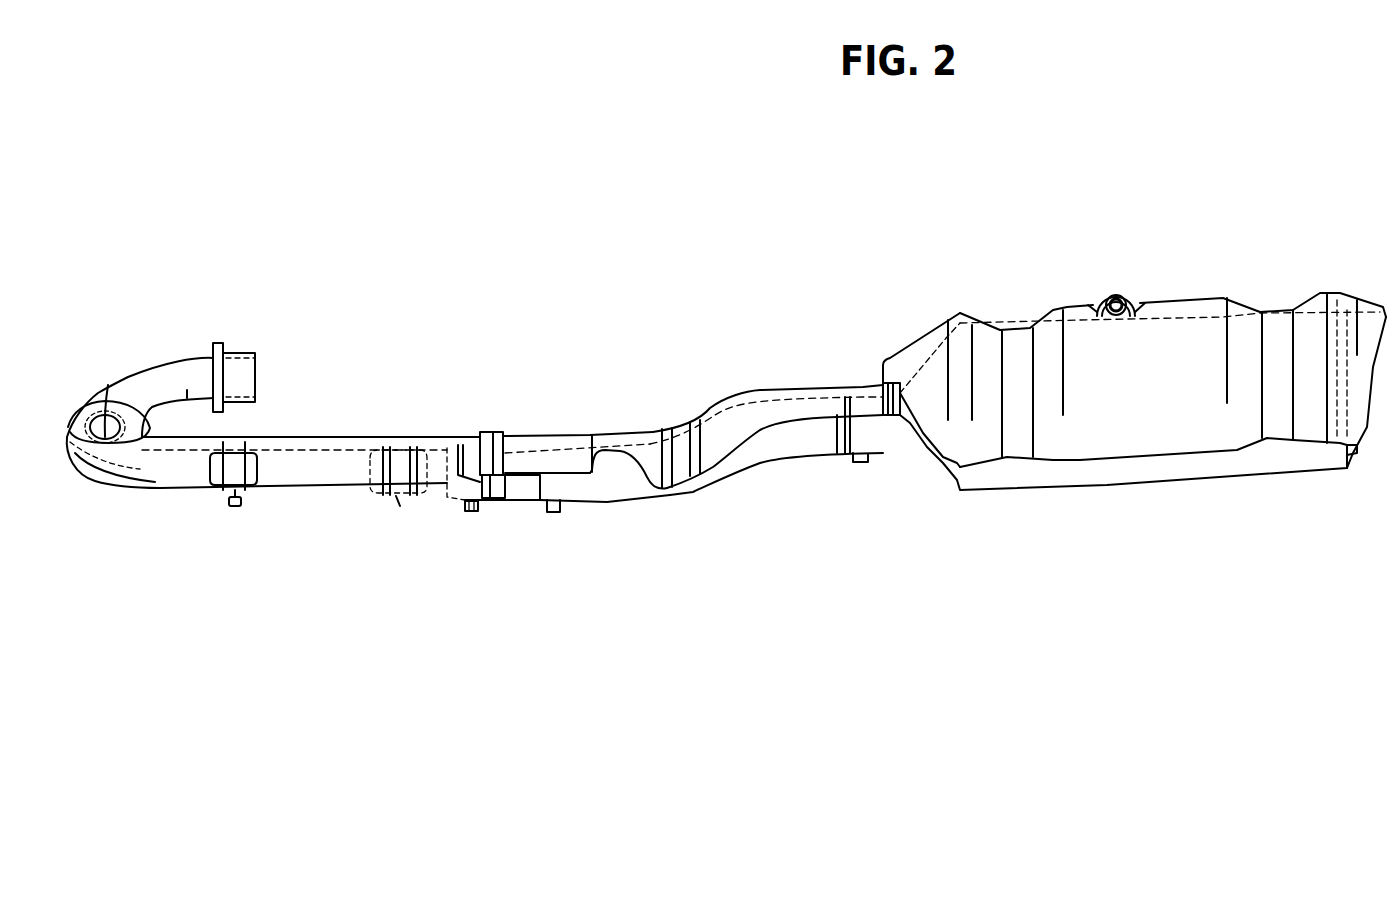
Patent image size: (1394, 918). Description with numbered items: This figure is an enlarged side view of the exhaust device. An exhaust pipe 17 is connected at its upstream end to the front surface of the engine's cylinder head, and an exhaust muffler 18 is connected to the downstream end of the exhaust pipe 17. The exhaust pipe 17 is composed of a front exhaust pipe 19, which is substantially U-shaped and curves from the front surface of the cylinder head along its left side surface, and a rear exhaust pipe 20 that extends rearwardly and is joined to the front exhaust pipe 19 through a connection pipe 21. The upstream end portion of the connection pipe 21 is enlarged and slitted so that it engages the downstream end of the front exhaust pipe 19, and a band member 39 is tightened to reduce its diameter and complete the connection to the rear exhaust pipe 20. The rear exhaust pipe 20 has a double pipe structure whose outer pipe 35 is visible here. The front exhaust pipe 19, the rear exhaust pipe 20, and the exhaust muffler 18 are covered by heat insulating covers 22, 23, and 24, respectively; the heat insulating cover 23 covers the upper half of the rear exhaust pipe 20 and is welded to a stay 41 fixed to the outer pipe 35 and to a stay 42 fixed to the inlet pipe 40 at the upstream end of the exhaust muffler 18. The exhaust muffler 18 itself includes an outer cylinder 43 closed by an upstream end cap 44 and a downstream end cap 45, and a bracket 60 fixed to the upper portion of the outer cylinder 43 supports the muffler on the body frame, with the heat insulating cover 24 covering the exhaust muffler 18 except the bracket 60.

The exhaust pipe 17 is at (178, 358).
The exhaust muffler 18 is at (1107, 484).
The front exhaust pipe 19 is at (346, 451).
The rear exhaust pipe 20 is at (673, 499).
The connection pipe 21 is at (493, 501).
The heat insulating cover 22 is at (289, 436).
The heat insulating cover 23 is at (743, 395).
The heat insulating cover 24 is at (1195, 307).
The outer pipe 35 is at (743, 457).
The band member 39 is at (466, 512).
The inlet pipe 40 is at (885, 447).
The stay 41 is at (562, 436).
The stay 42 is at (865, 387).
The outer cylinder 43 is at (1205, 465).
The upstream end cap 44 is at (935, 475).
The downstream end cap 45 is at (1352, 455).
The bracket 60 is at (1117, 285).